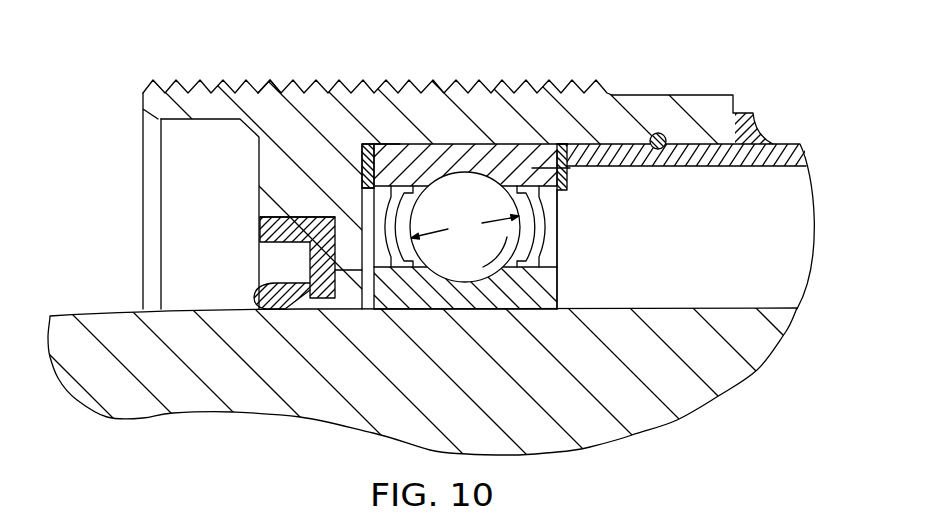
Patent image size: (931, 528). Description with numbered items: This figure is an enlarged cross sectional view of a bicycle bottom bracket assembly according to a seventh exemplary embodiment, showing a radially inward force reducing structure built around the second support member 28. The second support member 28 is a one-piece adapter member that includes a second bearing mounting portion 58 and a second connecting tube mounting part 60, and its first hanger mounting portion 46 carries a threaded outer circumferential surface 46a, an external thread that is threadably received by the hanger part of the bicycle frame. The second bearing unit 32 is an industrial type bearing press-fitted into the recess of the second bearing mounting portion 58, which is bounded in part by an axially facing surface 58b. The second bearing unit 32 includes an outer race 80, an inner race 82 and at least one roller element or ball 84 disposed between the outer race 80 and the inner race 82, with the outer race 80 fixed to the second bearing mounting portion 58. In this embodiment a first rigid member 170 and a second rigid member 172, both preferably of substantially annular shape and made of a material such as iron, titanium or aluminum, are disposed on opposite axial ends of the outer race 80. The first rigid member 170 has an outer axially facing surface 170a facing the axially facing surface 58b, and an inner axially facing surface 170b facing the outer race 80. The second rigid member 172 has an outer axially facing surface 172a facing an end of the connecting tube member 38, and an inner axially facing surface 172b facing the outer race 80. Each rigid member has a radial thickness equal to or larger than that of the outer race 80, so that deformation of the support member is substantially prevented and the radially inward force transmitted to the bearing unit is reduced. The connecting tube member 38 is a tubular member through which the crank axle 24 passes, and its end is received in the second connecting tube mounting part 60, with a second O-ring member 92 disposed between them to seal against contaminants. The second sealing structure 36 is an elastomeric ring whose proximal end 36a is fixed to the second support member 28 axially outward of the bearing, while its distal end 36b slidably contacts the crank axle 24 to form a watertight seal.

The crank axle 24 is at (40, 325).
The second support member 28 is at (135, 144).
The second bearing unit 32 is at (568, 280).
The second sealing structure 36 is at (310, 263).
The proximal end 36a is at (297, 216).
The distal end 36b is at (256, 294).
The connecting tube member 38 is at (780, 137).
The first hanger mounting portion 46 is at (238, 76).
The threaded outer circumferential surface 46a is at (272, 83).
The second bearing mounting portion 58 is at (465, 136).
The axially facing surface 58b is at (358, 152).
The second connecting tube mounting part 60 is at (708, 88).
The outer race 80 is at (570, 168).
The inner race 82 is at (484, 276).
The roller element or ball 84 is at (458, 258).
The second O-ring member 92 is at (659, 133).
The first rigid member 170 is at (362, 143).
The outer axially facing surface 170a is at (368, 158).
The inner axially facing surface 170b is at (380, 143).
The second rigid member 172 is at (562, 172).
The outer axially facing surface 172a is at (578, 143).
The inner axially facing surface 172b is at (552, 160).